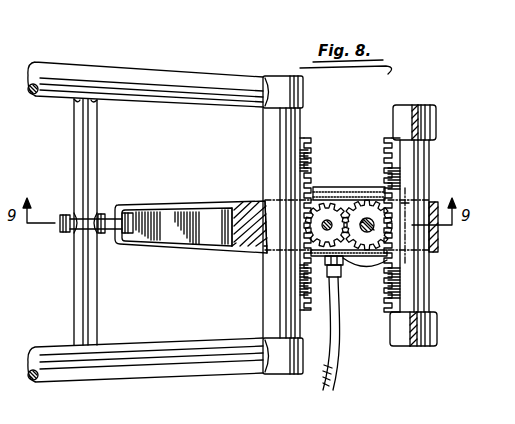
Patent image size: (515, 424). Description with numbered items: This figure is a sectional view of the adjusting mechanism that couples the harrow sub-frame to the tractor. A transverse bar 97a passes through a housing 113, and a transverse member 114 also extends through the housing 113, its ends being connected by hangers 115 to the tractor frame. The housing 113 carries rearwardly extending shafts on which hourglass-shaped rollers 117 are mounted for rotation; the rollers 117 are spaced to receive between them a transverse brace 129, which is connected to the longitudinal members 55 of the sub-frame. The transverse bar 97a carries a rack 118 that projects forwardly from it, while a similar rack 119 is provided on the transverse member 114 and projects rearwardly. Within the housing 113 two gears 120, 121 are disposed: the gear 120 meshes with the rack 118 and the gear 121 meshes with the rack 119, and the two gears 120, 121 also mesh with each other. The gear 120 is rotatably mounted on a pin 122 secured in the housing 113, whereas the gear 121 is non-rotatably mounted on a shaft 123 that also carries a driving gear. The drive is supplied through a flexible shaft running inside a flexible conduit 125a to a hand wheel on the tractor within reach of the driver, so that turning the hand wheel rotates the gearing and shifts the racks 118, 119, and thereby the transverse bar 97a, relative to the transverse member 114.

The longitudinal members 55 is at (118, 76).
The transverse brace 129 is at (91, 158).
The roller 117 is at (83, 228).
The housing 113 is at (249, 260).
The transverse bar 97a is at (273, 138).
The rack 118 is at (308, 141).
The rack 119 is at (390, 140).
The transverse member 114 is at (433, 163).
The hangers 115 is at (436, 113).
The gear 121 is at (370, 246).
The gear 120 is at (336, 208).
The pin 122 is at (322, 225).
The shaft 123 is at (378, 228).
The flexible conduit 125a is at (343, 362).